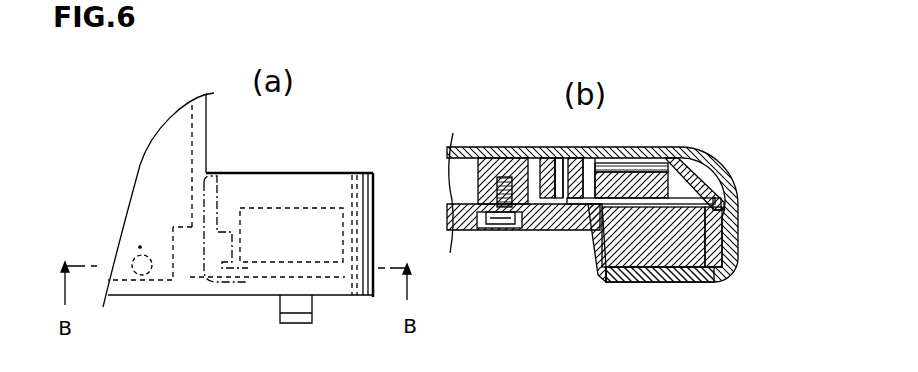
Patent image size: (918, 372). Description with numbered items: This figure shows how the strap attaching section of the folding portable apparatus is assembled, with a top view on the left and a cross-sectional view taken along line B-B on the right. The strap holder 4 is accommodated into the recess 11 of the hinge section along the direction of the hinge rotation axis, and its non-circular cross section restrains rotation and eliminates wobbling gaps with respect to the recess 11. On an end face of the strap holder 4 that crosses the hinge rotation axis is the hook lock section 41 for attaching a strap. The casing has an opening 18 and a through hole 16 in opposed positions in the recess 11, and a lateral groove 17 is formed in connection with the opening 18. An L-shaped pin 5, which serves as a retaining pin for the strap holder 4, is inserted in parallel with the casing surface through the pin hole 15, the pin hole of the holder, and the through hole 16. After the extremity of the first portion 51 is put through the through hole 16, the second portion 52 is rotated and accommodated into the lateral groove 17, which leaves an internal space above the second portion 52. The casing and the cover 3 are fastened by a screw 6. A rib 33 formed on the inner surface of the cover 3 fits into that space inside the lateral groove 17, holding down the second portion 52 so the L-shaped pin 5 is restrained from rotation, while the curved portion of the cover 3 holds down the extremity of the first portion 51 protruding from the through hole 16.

The cover 3 is at (325, 182).
The strap holder 4 is at (598, 270).
The L-shaped pin 5 is at (263, 273).
The screw 6 is at (490, 230).
The recess 11 is at (650, 262).
The pin hole 15 is at (240, 257).
The through hole 16 is at (368, 243).
The lateral groove 17 is at (212, 205).
The opening 18 is at (184, 258).
The rib 33 is at (225, 170).
The hook lock section 41 is at (307, 326).
The first portion 51 is at (362, 299).
The second portion 52 is at (190, 215).